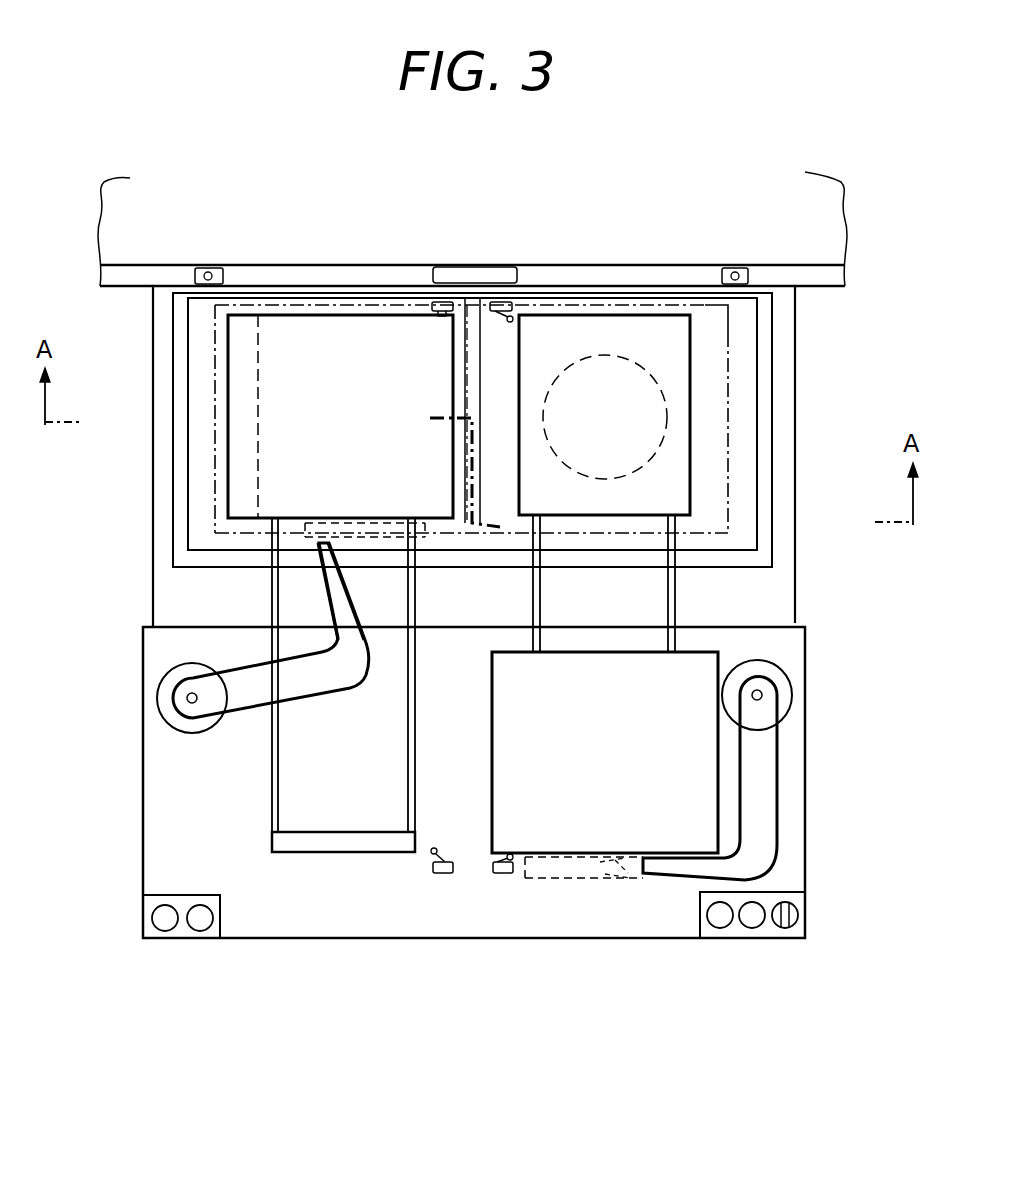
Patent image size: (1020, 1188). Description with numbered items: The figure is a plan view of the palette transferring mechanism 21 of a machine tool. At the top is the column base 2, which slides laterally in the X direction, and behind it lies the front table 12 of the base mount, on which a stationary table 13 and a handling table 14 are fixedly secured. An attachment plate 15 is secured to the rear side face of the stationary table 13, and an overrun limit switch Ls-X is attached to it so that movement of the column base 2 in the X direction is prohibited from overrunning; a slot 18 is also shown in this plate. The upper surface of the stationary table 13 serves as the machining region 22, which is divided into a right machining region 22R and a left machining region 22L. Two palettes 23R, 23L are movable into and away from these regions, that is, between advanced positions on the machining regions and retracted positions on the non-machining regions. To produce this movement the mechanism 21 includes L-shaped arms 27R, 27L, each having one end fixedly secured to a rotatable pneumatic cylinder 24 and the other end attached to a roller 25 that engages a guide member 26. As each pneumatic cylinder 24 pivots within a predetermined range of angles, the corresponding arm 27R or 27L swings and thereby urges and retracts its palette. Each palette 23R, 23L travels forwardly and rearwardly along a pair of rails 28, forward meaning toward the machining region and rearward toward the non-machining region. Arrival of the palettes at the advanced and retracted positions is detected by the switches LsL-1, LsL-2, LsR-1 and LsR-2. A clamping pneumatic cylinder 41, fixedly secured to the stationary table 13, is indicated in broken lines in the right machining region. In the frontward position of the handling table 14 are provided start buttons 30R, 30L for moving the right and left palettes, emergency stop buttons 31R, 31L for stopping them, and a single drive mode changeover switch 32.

The column base 2 is at (822, 218).
The front table 12 is at (795, 455).
The stationary table 13 is at (757, 393).
The handling table 14 is at (795, 765).
The attachment plate 15 is at (650, 275).
The slot 18 is at (483, 268).
The palette transferring mechanism 21 is at (190, 597).
The machining region 22 is at (215, 407).
The left machining region 22L is at (230, 537).
The right machining region 22R is at (785, 526).
The left palette 23L is at (296, 335).
The right palette 23R is at (492, 853).
The rotatable pneumatic cylinder 24 is at (175, 688).
The roller 25 is at (345, 520).
The guide member 26 is at (313, 532).
The left L-shaped arm 27L is at (240, 710).
The right L-shaped arm 27R is at (777, 828).
The rails 28 is at (410, 778).
The left start button 30L is at (165, 925).
The right start button 30R is at (720, 928).
The left emergency stop button 31L is at (205, 925).
The right emergency stop button 31R is at (752, 928).
The single drive mode changeover switch 32 is at (795, 912).
The clamping pneumatic cylinder 41 is at (640, 362).
The overrun limit switch Ls-X is at (200, 268).
The switch LsL-1 is at (433, 302).
The switch LsR-1 is at (512, 302).
The switch LsL-2 is at (441, 876).
The switch LsR-2 is at (509, 876).